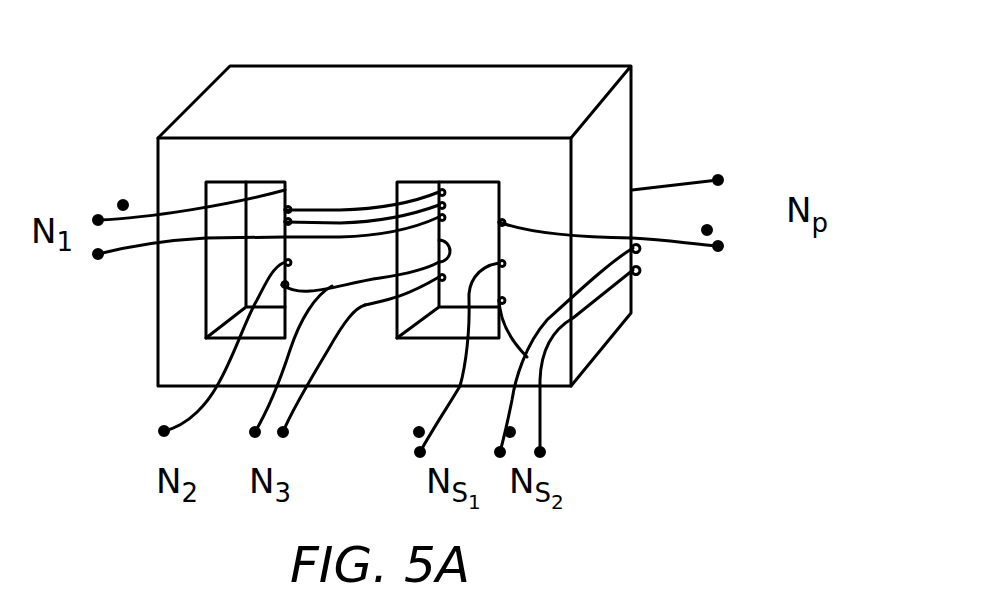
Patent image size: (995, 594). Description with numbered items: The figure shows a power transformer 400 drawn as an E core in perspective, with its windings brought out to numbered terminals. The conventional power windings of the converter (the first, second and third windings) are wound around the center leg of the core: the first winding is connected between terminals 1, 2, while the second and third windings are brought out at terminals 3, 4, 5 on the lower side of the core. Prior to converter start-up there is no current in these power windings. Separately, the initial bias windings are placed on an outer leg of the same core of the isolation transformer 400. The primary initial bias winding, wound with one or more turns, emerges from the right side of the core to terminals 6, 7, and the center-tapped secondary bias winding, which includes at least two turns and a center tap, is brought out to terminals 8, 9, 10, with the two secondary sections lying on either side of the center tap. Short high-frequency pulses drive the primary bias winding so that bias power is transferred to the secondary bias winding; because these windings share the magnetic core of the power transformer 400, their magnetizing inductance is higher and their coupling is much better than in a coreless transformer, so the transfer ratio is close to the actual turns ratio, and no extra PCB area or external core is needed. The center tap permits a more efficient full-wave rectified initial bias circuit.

The isolation transformer 400 is at (682, 64).
The terminal 1 of primary winding N1 1 is at (180, 191).
The terminal 2 of primary winding N1 2 is at (260, 266).
The terminal 3 of winding N2 3 is at (192, 358).
The terminal 4 of windings N2/N3 4 is at (267, 369).
The terminal 5 of winding N3 5 is at (322, 379).
The terminal 6 of winding Np 6 is at (702, 175).
The terminal 7 of winding Np 7 is at (636, 245).
The terminal 8 of secondary winding NS1 8 is at (432, 360).
The terminal 9 of secondary windings NS1/NS2 9 is at (544, 352).
The terminal 10 of secondary winding NS2 10 is at (585, 363).